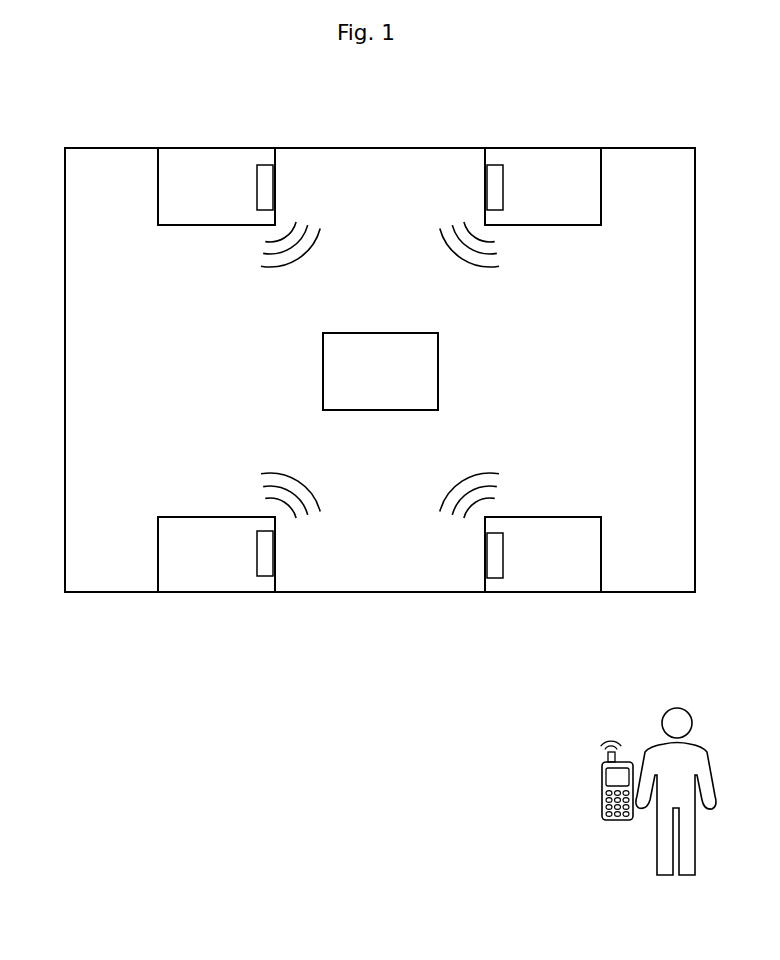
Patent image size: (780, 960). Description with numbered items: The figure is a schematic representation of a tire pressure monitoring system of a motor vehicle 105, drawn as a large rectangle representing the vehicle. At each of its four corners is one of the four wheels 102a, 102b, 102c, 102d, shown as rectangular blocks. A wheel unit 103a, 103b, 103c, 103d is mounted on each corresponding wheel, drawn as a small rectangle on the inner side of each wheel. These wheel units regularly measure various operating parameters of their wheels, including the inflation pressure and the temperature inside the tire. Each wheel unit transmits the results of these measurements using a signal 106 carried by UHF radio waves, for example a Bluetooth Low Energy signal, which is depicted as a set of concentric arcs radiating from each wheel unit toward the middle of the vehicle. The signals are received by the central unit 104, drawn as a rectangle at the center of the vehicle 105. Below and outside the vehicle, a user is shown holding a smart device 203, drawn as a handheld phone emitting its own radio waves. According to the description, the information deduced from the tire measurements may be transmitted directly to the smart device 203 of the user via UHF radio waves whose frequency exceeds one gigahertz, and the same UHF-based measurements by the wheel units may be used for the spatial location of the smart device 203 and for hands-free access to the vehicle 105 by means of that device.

The wheel 102a is at (158, 188).
The wheel 102b is at (601, 188).
The wheel 102c is at (158, 555).
The wheel 102d is at (601, 555).
The wheel unit 103a is at (257, 187).
The wheel unit 103b is at (503, 187).
The wheel unit 103c is at (257, 555).
The wheel unit 103d is at (503, 555).
The central unit 104 is at (408, 410).
The motor vehicle 105 is at (410, 148).
The signal 106 is at (297, 225).
The smart device 203 is at (602, 782).